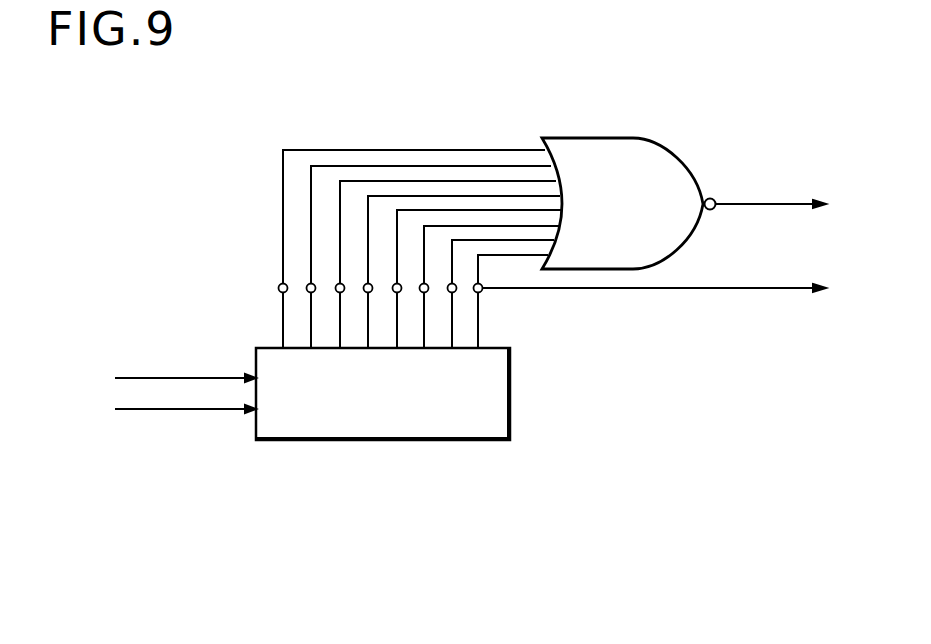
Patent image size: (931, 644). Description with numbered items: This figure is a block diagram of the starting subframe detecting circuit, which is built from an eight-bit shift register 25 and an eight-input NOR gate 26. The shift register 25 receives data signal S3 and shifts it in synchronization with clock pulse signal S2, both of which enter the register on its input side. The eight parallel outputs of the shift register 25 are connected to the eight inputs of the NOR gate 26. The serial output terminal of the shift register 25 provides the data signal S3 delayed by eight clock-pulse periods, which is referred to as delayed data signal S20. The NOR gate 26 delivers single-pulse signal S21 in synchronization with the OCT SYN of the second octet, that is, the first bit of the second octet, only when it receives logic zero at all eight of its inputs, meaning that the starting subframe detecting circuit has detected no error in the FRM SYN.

The shift register 25 is at (512, 395).
The NOR gate 26 is at (580, 137).
The clock pulse signal S2 is at (157, 377).
The data signal S3 is at (153, 412).
The delayed data signal S20 is at (681, 289).
The single-pulse signal S21 is at (798, 204).